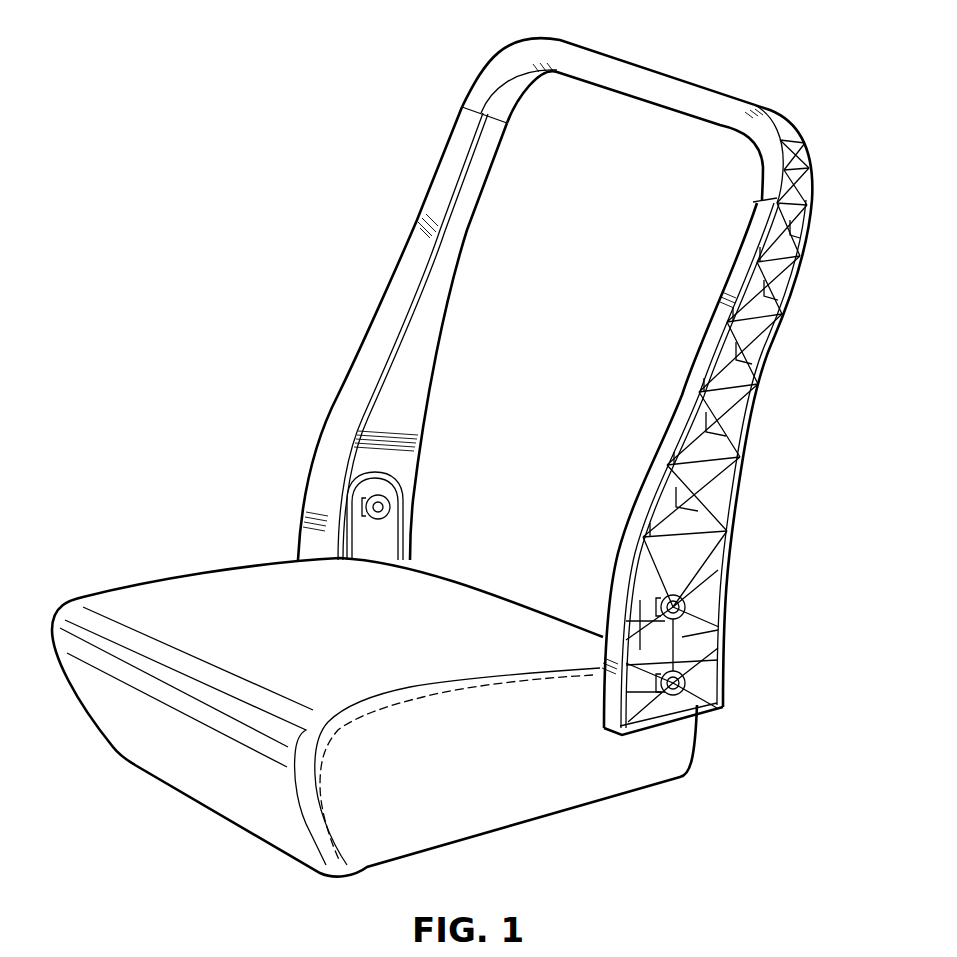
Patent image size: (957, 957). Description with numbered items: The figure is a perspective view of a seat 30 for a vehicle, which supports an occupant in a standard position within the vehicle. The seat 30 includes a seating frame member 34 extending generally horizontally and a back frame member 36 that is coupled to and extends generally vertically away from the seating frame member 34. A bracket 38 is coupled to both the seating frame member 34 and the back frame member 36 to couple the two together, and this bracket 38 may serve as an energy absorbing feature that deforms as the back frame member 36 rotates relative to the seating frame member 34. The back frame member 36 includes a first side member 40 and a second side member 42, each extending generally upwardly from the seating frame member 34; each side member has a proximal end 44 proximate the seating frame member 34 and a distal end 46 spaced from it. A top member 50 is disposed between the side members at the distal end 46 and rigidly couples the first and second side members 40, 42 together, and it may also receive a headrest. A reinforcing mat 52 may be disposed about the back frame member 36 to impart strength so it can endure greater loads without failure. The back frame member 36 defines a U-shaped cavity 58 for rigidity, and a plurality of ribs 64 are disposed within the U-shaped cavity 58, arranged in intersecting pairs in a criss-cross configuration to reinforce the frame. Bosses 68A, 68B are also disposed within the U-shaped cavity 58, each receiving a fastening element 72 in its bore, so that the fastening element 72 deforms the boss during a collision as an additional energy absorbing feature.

The seat 30 is at (708, 778).
The seating frame member 34 is at (360, 832).
The back frame member 36 is at (737, 76).
The bracket 38 is at (355, 542).
The first side member 40 is at (800, 287).
The second side member 42 is at (397, 216).
The proximal end 44 is at (735, 690).
The distal end 46 is at (820, 194).
The top member 50 is at (627, 68).
The reinforcing mat 52 is at (413, 392).
The U-shaped cavity 58 is at (690, 550).
The ribs 64 is at (693, 440).
The boss 68A is at (652, 602).
The boss 68B is at (645, 676).
The fastening element 72 is at (684, 607).